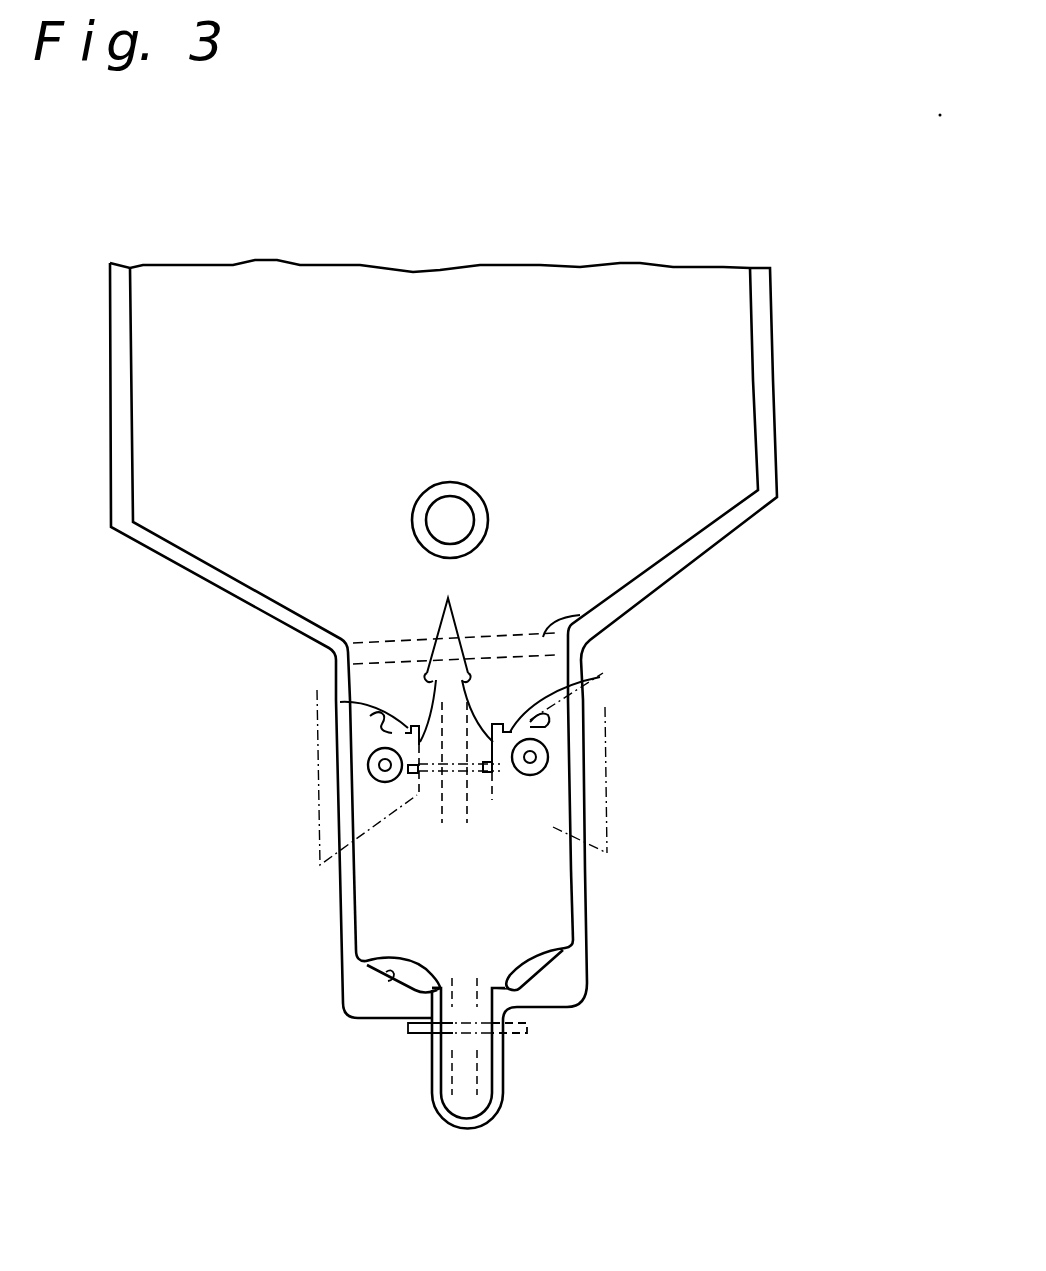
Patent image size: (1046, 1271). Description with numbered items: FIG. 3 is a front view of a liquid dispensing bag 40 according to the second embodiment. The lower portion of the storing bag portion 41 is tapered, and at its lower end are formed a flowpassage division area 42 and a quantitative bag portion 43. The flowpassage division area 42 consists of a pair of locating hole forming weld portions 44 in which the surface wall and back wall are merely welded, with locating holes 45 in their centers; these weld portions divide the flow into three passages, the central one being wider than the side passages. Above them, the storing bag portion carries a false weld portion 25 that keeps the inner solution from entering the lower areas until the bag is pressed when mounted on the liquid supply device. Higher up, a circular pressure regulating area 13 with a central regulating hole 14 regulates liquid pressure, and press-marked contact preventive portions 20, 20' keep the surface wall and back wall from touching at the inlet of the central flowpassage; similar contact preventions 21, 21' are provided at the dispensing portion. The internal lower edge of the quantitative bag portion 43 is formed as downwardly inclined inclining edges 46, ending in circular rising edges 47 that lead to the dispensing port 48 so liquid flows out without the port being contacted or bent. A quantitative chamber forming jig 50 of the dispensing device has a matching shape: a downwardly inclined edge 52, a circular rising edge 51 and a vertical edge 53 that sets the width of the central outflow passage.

The liquid dispensing bag 40 is at (775, 375).
The storing bag portion 41 is at (740, 457).
The quantitative bag portion 43 is at (553, 915).
The dispensing port 48 is at (487, 1093).
The circular rising edges 47 is at (385, 962).
The inclining edges 46 is at (450, 996).
The contact prevention 21 is at (378, 1057).
The contact prevention 21' is at (354, 1063).
The pressure regulating area 13 is at (480, 528).
The regulating hole 14 is at (450, 515).
The vertical edge 53 is at (447, 627).
The false weld portion 25 is at (580, 615).
The contact preventive portion 20 is at (558, 739).
The valve body (alternate position) 20' is at (599, 836).
The circular rising edge 51 is at (340, 702).
The downwardly inclined edge 52 is at (372, 730).
The quantitative chamber forming jig 50 is at (370, 817).
The locating holes 45 is at (382, 763).
The locating hole forming weld portions 44 is at (372, 777).
The flowpassage division area 42 is at (470, 810).